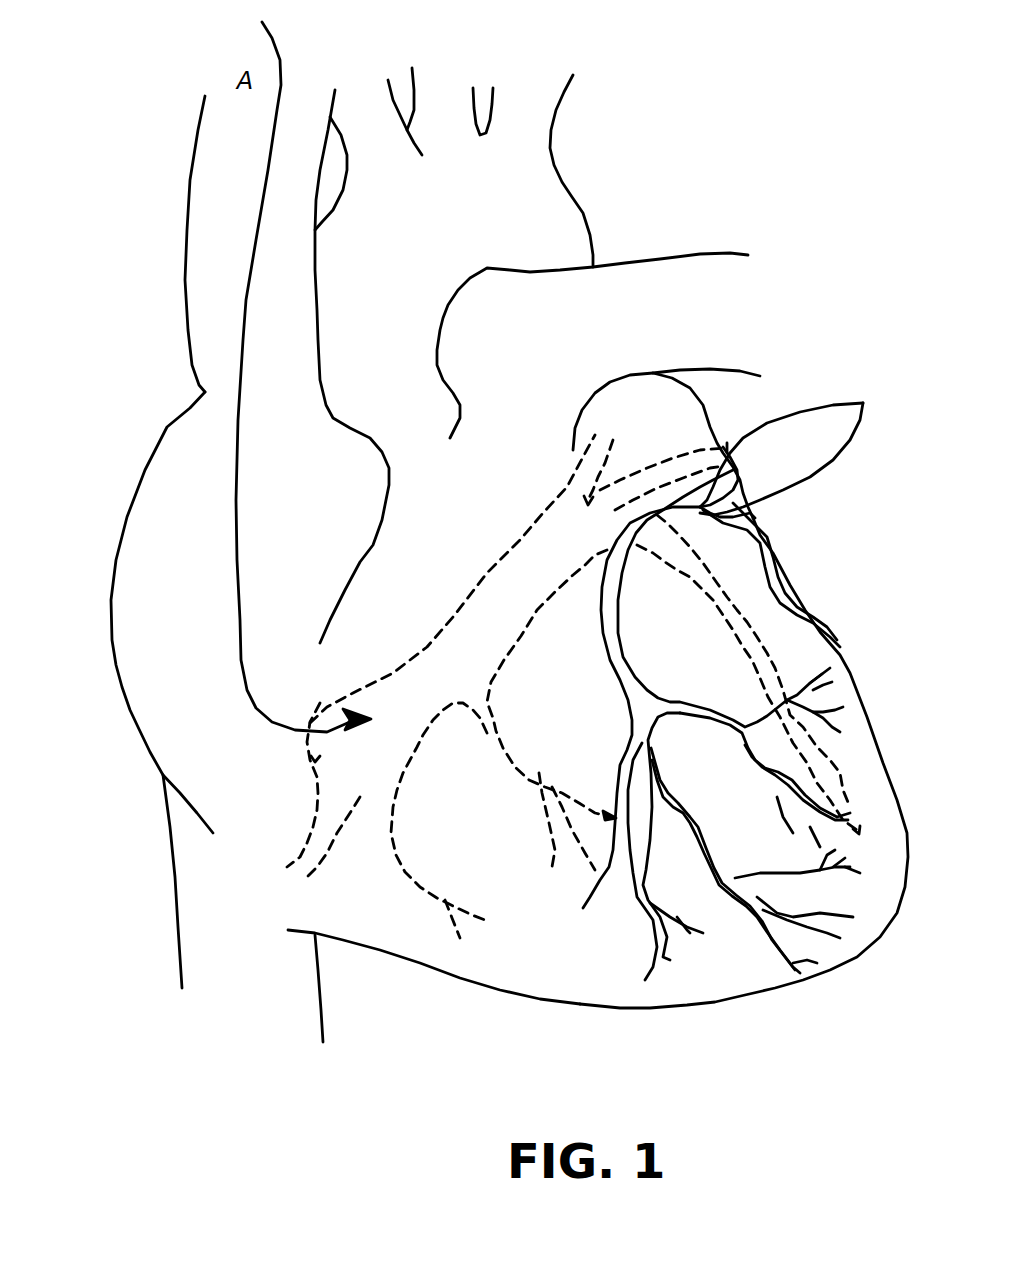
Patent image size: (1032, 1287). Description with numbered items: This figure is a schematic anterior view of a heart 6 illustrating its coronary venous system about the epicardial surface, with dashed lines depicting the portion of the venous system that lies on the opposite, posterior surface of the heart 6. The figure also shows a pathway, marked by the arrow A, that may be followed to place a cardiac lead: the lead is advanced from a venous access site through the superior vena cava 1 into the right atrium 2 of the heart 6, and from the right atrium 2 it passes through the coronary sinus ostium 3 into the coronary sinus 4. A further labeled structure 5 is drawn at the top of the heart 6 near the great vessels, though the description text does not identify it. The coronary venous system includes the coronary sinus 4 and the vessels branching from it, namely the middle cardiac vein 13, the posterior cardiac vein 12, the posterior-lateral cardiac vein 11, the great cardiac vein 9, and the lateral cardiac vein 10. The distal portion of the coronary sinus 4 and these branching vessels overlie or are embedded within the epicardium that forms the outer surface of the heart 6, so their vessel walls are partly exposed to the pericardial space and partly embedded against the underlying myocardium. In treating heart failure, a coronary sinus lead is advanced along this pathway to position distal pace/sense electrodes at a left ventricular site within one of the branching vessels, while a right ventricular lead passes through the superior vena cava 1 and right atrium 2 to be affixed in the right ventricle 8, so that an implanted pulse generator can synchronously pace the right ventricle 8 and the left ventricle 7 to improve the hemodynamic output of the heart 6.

The superior vena cava 1 is at (202, 237).
The right atrium 2 is at (152, 685).
The coronary sinus ostium 3 is at (313, 742).
The coronary sinus 4 is at (437, 660).
The aortic arch 5 is at (665, 427).
The heart 6 is at (780, 132).
The left ventricle 7 is at (823, 655).
The right ventricle 8 is at (567, 973).
The great cardiac vein 9 is at (863, 403).
The lateral cardiac vein 10 is at (772, 557).
The posterior-lateral cardiac vein 11 is at (712, 604).
The posterior cardiac vein 12 is at (493, 737).
The middle cardiac vein 13 is at (393, 847).